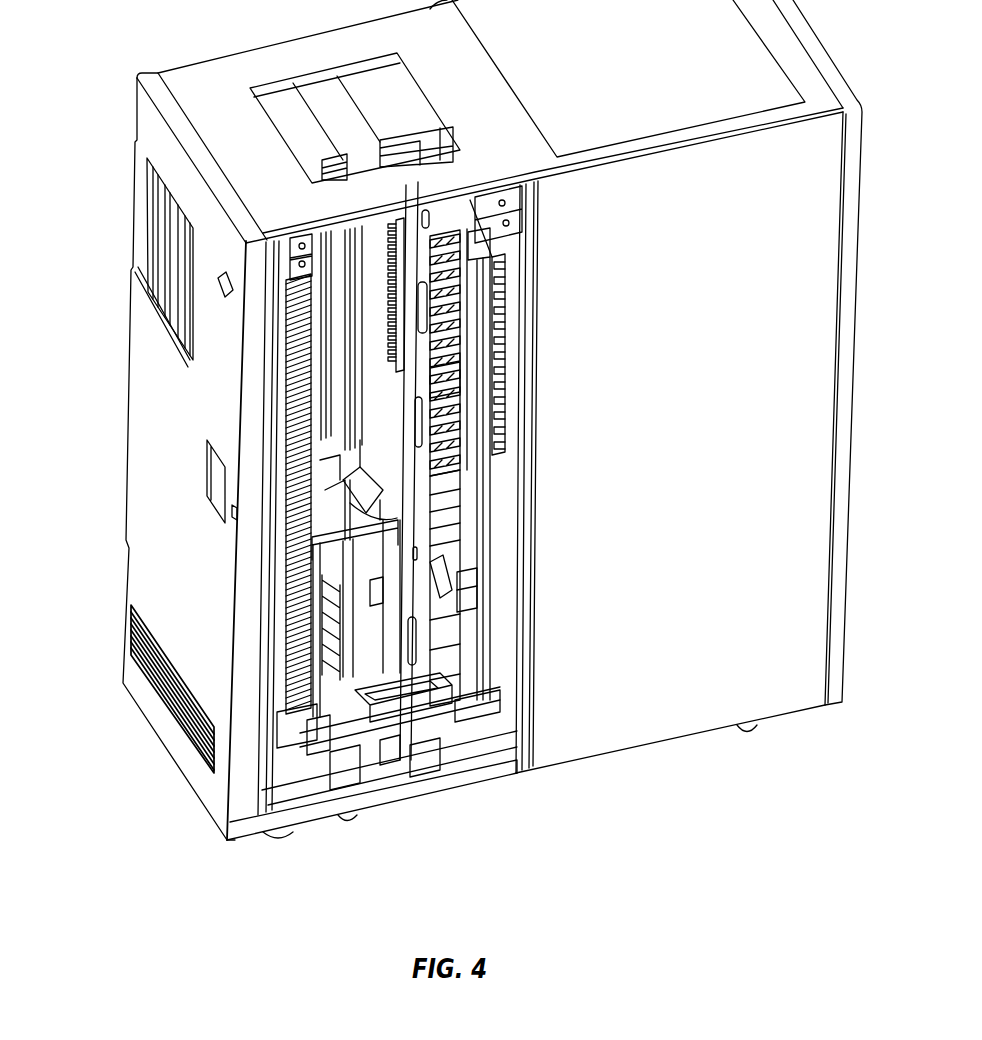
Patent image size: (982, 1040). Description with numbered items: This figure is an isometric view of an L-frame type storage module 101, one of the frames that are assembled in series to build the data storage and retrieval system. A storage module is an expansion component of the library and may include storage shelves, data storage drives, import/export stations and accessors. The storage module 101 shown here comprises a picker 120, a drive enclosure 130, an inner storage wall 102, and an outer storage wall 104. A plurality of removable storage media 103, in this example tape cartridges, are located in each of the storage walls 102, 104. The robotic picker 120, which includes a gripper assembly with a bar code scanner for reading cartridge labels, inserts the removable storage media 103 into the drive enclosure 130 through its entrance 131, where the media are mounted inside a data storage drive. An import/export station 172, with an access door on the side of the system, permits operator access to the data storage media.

The storage module 101 is at (236, 68).
The import/export station 172 is at (178, 243).
The inner storage wall 102 is at (480, 320).
The removable storage media 103 is at (452, 388).
The picker 120 is at (380, 528).
The entrance 131 is at (440, 565).
The drive enclosure 130 is at (470, 592).
The outer storage wall 104 is at (298, 705).